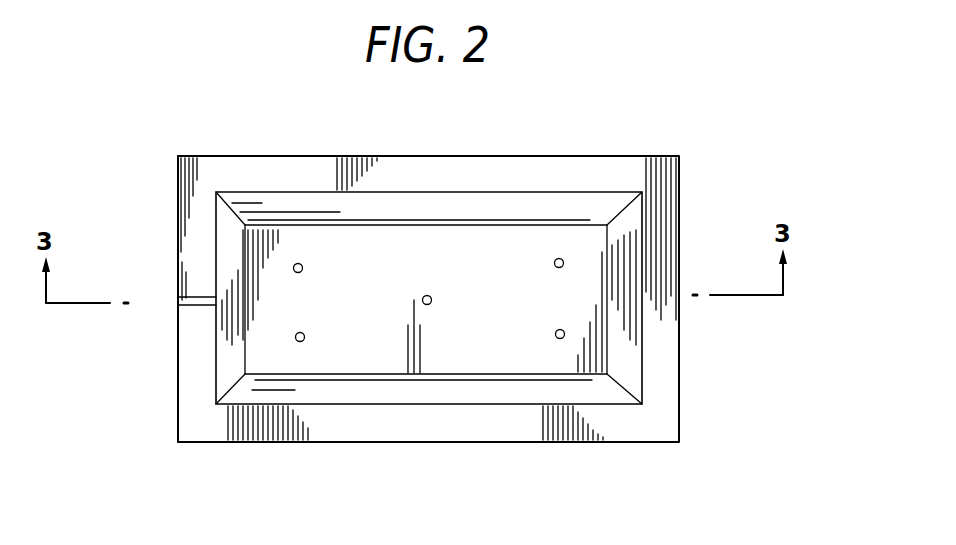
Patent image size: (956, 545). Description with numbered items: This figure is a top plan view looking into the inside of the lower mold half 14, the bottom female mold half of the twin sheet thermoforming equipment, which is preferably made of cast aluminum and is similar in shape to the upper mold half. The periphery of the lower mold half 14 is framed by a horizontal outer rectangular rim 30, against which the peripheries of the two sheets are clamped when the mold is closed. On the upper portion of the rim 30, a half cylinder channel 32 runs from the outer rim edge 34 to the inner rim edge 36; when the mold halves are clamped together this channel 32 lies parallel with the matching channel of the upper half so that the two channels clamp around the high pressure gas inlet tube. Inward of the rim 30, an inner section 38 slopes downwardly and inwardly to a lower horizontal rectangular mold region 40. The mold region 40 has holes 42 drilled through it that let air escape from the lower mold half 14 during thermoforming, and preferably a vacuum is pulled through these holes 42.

The lower mold half 14 is at (760, 204).
The horizontal outer rectangular rim 30 is at (450, 168).
The half cylinder channel 32 is at (178, 302).
The outer rim edge 34 is at (180, 256).
The inner rim edge 36 is at (232, 352).
The inner section 38 is at (228, 238).
The lower horizontal rectangular mold region 40 is at (541, 348).
The holes 42 is at (306, 337).